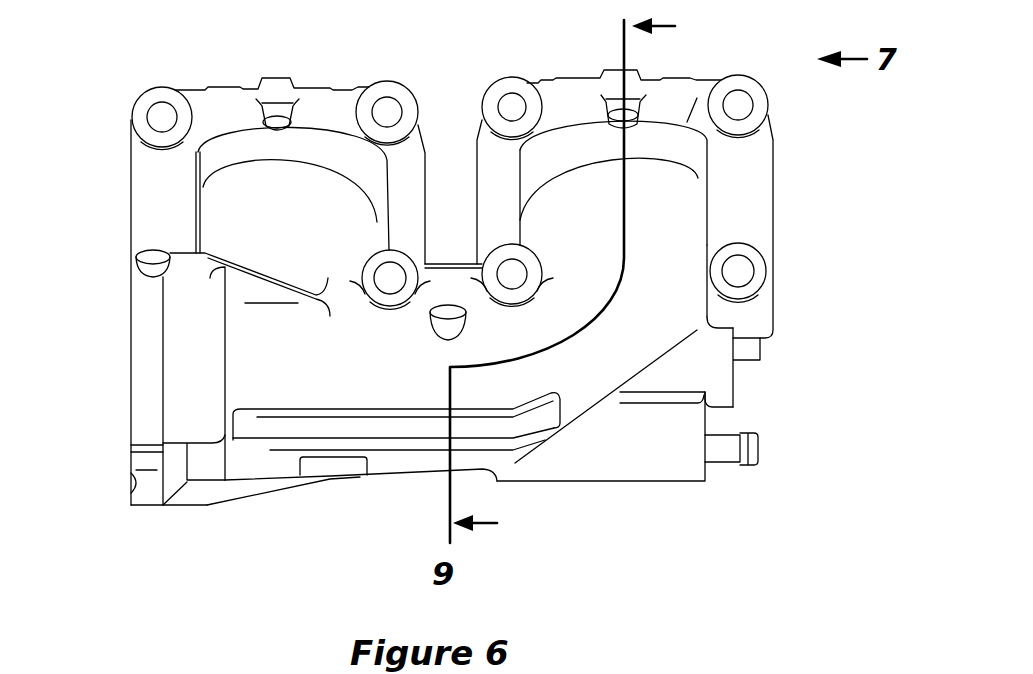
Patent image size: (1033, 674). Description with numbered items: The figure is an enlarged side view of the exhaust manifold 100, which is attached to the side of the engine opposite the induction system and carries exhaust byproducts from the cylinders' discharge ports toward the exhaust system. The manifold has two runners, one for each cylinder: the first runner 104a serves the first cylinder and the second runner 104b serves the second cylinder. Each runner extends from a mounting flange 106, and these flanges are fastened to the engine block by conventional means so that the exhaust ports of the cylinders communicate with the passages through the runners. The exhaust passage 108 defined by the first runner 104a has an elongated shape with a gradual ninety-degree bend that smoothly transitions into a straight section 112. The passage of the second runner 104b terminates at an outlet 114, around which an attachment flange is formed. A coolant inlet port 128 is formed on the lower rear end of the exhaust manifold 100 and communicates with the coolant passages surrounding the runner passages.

The exhaust manifold 100 is at (812, 145).
The first runner 104a is at (586, 391).
The second runner 104b is at (307, 180).
The mounting flange 106 is at (240, 76).
The exhaust passage 108 is at (688, 71).
The straight section 112 is at (337, 383).
The outlet 114 is at (122, 355).
The coolant inlet port 128 is at (727, 453).